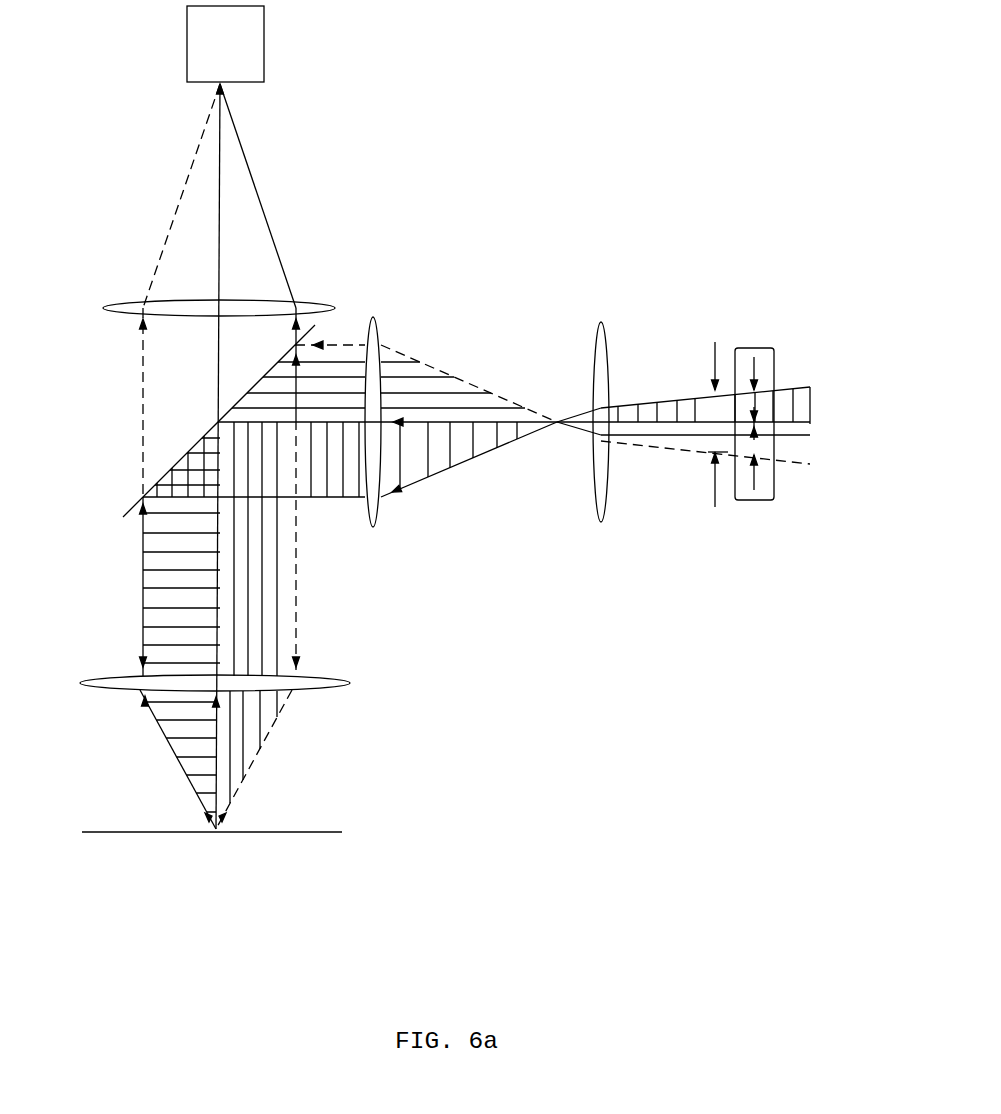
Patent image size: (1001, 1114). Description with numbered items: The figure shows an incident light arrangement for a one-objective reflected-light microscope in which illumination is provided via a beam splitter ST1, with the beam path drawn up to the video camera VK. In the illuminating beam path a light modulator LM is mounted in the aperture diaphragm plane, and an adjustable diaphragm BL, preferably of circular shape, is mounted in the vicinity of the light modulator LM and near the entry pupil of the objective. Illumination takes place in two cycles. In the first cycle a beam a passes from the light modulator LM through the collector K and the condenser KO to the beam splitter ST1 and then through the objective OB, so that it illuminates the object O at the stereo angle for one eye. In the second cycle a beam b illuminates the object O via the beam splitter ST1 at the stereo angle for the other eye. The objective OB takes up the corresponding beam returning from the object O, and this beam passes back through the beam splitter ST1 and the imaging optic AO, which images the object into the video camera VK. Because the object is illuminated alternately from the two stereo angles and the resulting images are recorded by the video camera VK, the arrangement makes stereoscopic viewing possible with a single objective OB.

The video camera VK is at (264, 42).
The imaging optic AO is at (200, 308).
The beam splitter ST1 is at (125, 514).
The condenser KO is at (373, 527).
The collector K is at (601, 522).
The adjustable diaphragm BL is at (716, 410).
The light modulator LM is at (763, 500).
The beam a is at (812, 406).
The beam b is at (812, 455).
The objective OB is at (350, 683).
The object O is at (333, 832).